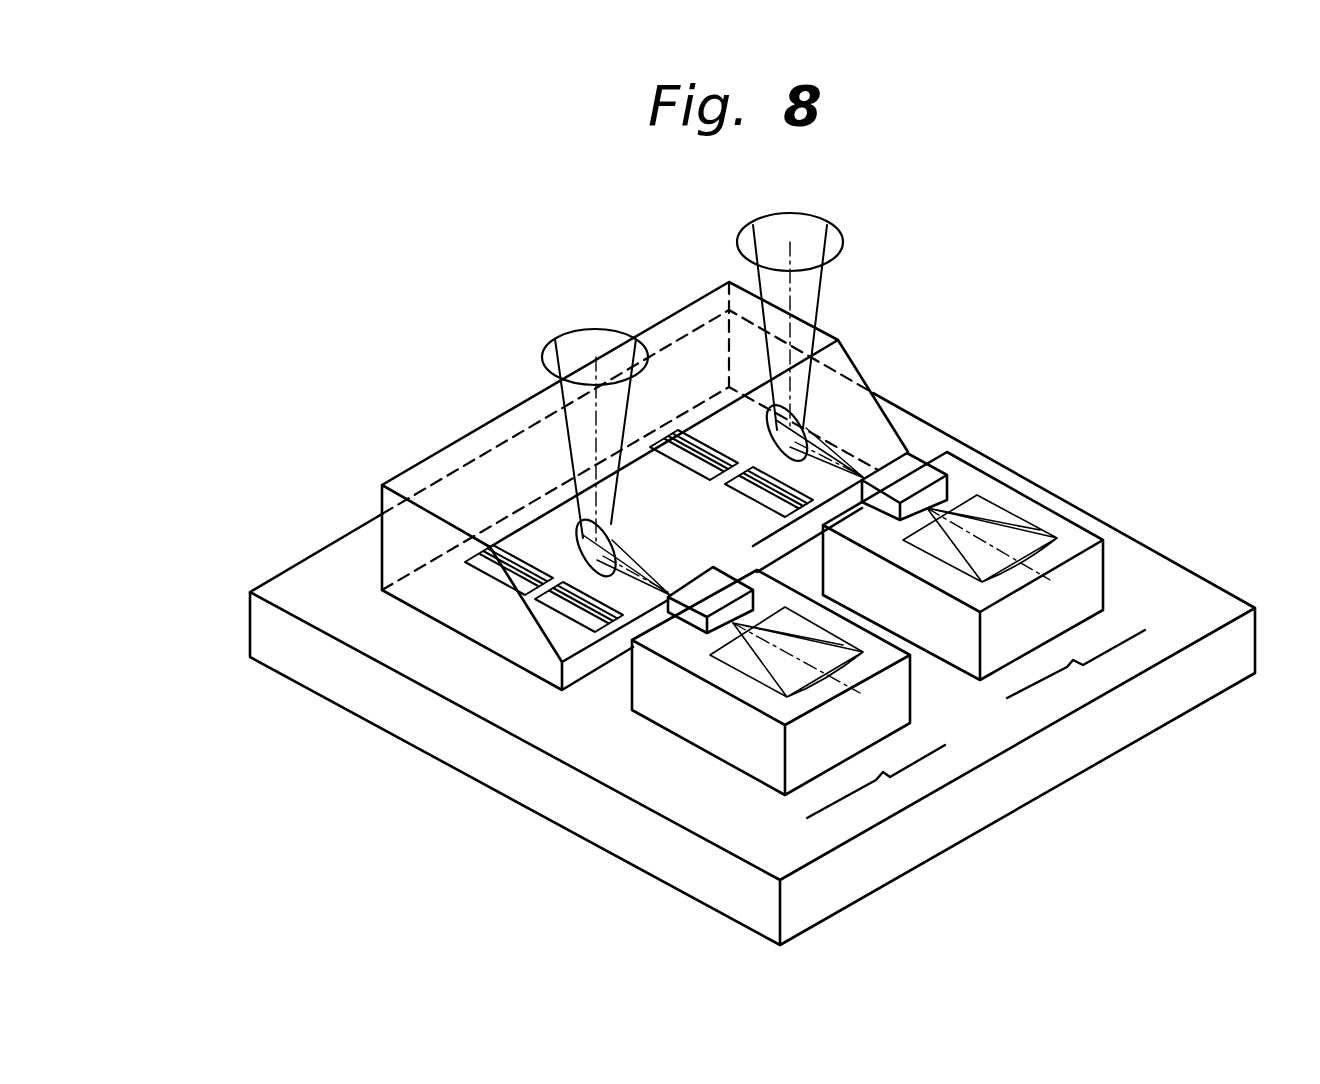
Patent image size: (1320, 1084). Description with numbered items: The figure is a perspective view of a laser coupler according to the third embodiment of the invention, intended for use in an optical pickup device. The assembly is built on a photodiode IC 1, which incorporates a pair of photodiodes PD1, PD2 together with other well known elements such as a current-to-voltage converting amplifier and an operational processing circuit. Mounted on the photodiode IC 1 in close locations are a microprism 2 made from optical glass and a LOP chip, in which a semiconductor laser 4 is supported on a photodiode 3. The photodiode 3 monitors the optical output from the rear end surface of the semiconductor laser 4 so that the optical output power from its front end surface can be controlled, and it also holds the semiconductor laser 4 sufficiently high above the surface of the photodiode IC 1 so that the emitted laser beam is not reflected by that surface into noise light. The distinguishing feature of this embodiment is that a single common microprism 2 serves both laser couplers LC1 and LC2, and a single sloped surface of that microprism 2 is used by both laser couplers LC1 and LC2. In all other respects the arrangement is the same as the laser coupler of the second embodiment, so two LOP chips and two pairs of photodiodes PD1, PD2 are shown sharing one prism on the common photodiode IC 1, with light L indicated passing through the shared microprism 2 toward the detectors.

The photodiode IC 1 is at (527, 783).
The microprism 2 is at (418, 470).
The photodiode 3 is at (772, 700).
The semiconductor laser 4 is at (700, 600).
The photodiode PD1 is at (560, 611).
The photodiode PD2 is at (486, 574).
The light beam L is at (837, 450).
The laser coupler LC1 is at (887, 780).
The laser coupler LC2 is at (1080, 668).